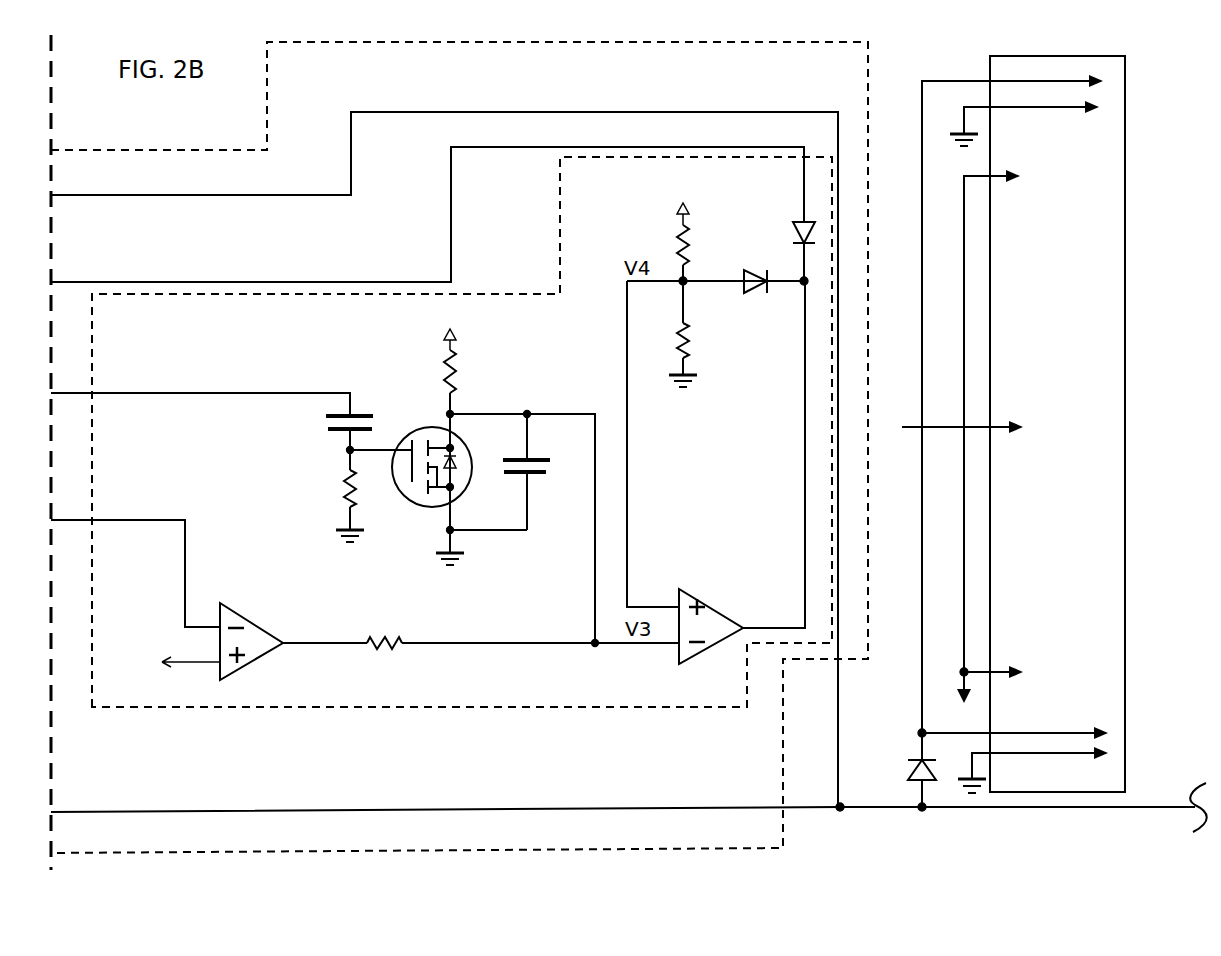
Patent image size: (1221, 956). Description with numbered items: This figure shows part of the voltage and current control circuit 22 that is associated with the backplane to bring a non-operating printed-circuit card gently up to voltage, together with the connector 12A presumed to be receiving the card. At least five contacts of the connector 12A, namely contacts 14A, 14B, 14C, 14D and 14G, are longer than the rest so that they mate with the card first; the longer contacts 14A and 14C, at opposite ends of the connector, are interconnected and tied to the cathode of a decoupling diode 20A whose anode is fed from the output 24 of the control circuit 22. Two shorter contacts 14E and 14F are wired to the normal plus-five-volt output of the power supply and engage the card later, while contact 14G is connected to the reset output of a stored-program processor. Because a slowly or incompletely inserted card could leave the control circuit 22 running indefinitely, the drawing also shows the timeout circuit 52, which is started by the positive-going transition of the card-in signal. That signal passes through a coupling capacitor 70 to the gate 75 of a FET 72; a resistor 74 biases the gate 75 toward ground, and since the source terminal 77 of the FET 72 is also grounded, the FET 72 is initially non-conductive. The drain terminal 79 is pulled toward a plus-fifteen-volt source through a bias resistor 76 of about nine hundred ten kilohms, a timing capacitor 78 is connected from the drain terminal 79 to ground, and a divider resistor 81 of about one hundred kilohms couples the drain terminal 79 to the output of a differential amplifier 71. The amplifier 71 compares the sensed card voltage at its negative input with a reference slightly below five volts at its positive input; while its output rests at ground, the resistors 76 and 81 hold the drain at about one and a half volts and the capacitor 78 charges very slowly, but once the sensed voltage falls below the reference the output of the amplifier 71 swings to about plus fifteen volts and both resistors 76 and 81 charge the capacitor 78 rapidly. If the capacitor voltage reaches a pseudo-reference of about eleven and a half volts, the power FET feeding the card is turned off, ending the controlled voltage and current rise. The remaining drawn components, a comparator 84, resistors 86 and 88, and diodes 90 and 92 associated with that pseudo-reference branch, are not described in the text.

The voltage and current control circuit 22 is at (230, 147).
The timeout circuit 52 is at (558, 215).
The coupling capacitor 70 is at (322, 425).
The differential amplifier 71 is at (258, 625).
The FET 72 is at (432, 503).
The resistor 74 is at (338, 488).
The gate 75 is at (382, 447).
The bias resistor 76 is at (462, 372).
The source terminal 77 is at (452, 522).
The timing capacitor 78 is at (540, 474).
The drain terminal 79 is at (458, 447).
The divider resistor 81 is at (380, 648).
The comparator 84 is at (710, 610).
The resistor 86 is at (698, 247).
The resistor 88 is at (690, 338).
The diode 90 is at (753, 291).
The diode 92 is at (795, 223).
The connector 12A is at (1078, 57).
The longer contact 14A is at (962, 81).
The longer contact 14B is at (1038, 108).
The longer contact 14C is at (1036, 731).
The longer contact 14D is at (1025, 755).
The shorter contact 14E is at (1000, 178).
The shorter contact 14F is at (1006, 668).
The contact 14G is at (1000, 425).
The decoupling diode 20A is at (914, 760).
The output 24 is at (875, 808).